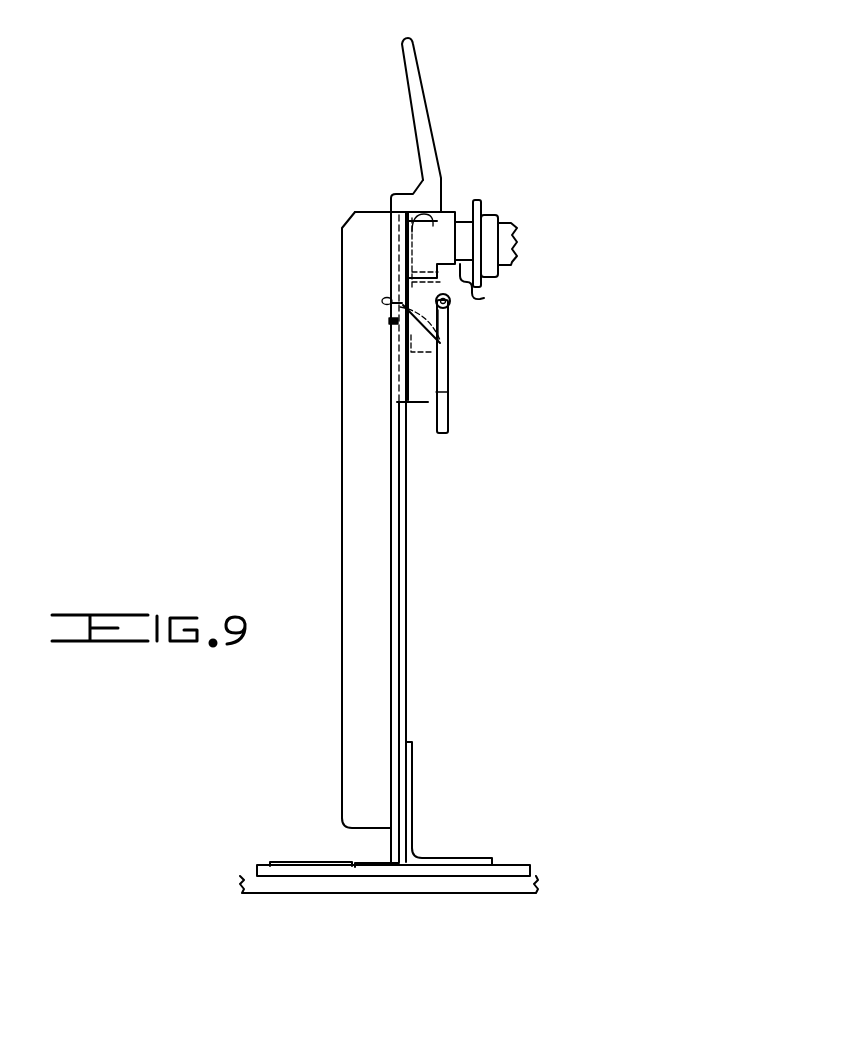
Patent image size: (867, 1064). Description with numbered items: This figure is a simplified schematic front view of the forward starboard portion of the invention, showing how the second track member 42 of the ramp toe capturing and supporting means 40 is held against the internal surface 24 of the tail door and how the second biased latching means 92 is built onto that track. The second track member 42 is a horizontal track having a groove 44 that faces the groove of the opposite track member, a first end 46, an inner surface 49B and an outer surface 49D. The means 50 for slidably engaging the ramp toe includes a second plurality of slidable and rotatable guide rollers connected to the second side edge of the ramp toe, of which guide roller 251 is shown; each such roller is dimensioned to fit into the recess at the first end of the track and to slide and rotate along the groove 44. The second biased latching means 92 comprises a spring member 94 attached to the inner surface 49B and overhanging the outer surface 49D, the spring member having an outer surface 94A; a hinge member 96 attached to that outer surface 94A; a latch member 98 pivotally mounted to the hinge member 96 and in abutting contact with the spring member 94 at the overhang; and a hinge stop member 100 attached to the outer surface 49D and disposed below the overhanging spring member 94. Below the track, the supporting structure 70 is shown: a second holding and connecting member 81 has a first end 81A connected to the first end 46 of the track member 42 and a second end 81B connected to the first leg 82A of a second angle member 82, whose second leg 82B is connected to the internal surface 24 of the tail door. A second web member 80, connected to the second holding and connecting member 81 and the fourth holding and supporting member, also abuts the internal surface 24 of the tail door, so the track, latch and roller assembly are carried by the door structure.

The second biased latching means 92 is at (375, 85).
The latch member 98 is at (412, 72).
The capturing and supporting means 40 is at (328, 192).
The groove 44 is at (424, 232).
The means for slidably engaging the ramp toe 50 is at (472, 187).
The guide roller 251 is at (458, 232).
The first end of second holding and connecting member 81A is at (355, 228).
The second track member 42 is at (484, 298).
The spring member 94 is at (385, 302).
The outer surface of second track member 49D is at (392, 318).
The hinge stop member 100 is at (390, 325).
The hinge member 96 is at (448, 340).
The outer surface of spring member 94A is at (446, 380).
The inner surface of second track member 49B is at (427, 395).
The first end of second track member 46 is at (420, 385).
The second holding and connecting member 81 is at (380, 587).
The second web member 80 is at (407, 627).
The support assembly 70 is at (326, 736).
The first leg of second angle member 82A is at (413, 767).
The second end of second holding and connecting member 81B is at (353, 810).
The second angle member 82 is at (415, 848).
The second leg of second angle member 82B is at (477, 855).
The internal surface of tail door 24 is at (521, 868).